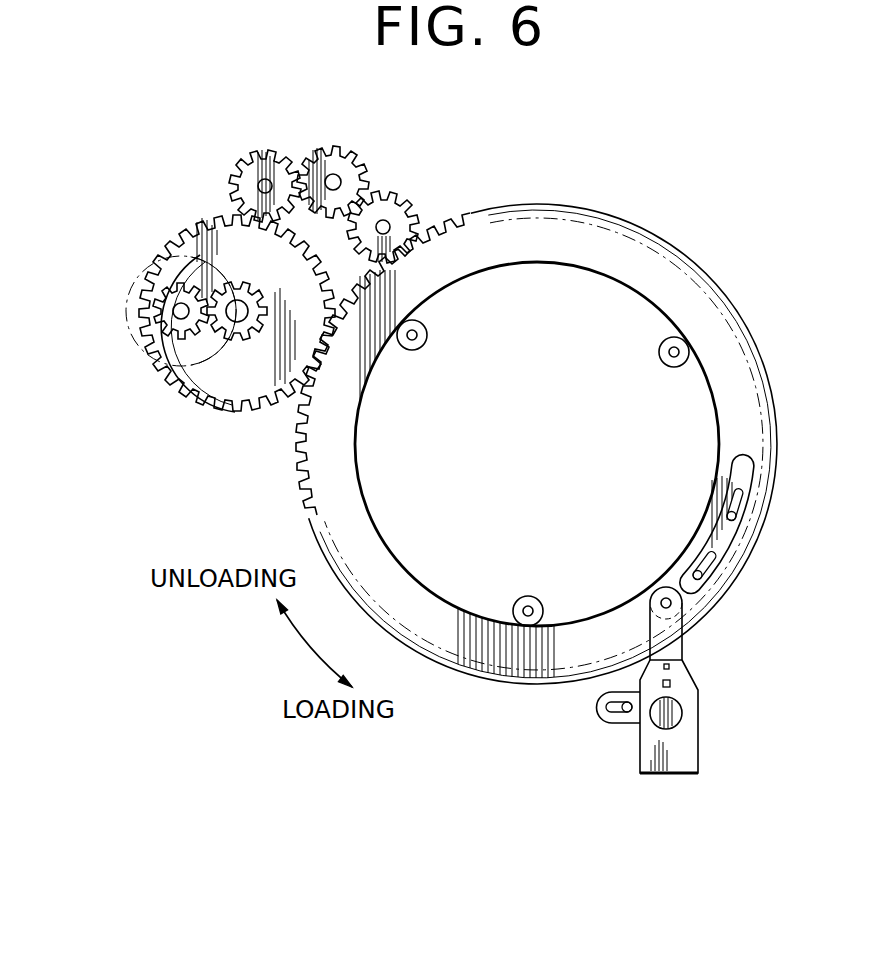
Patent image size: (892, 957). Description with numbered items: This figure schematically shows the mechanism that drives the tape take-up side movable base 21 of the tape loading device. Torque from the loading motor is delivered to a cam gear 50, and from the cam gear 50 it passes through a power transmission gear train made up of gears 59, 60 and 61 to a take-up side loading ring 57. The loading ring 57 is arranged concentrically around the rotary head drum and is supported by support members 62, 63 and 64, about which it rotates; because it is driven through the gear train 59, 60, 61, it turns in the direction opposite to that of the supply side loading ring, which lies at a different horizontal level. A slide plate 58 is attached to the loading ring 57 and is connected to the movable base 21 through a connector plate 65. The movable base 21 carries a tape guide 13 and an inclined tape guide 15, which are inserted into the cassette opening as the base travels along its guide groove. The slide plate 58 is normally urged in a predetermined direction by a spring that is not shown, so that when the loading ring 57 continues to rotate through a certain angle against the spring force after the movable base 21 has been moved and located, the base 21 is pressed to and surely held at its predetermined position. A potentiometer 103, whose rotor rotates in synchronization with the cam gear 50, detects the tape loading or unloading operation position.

The tape guide 13 is at (676, 715).
The inclined tape guide 15 is at (612, 712).
The movable base 21 is at (675, 765).
The cam gear 50 is at (248, 375).
The take-up side loading ring 57 is at (677, 278).
The slide plate 58 is at (722, 543).
The gear 59 is at (253, 158).
The gear 60 is at (340, 152).
The gear 61 is at (392, 210).
The support member 62 is at (416, 342).
The support member 63 is at (665, 358).
The support member 64 is at (532, 600).
The connector plate 65 is at (667, 643).
The potentiometer 103 is at (163, 335).